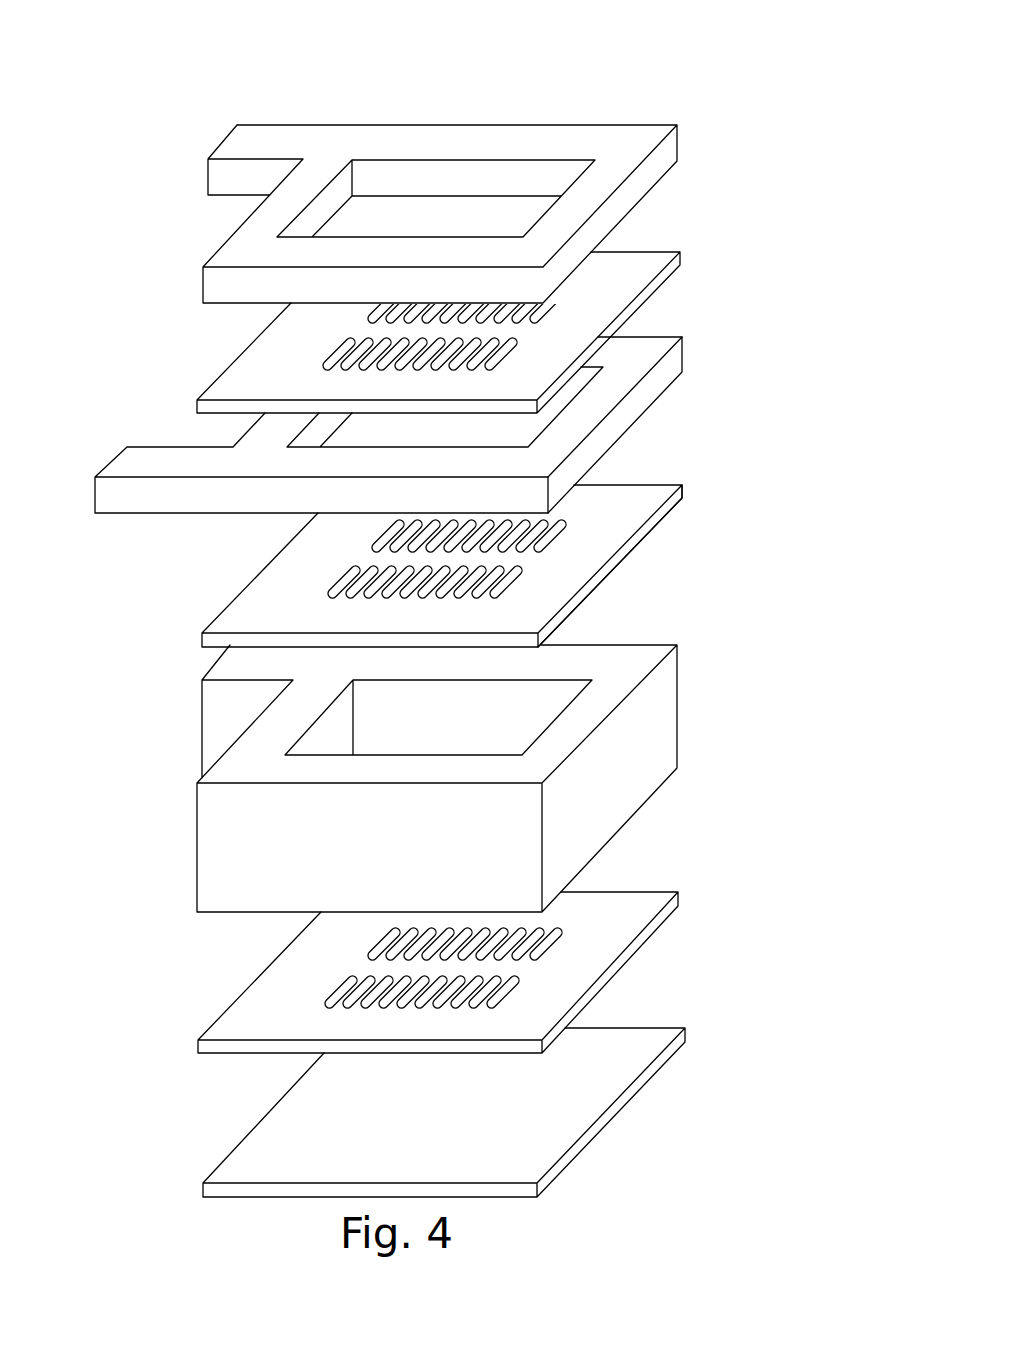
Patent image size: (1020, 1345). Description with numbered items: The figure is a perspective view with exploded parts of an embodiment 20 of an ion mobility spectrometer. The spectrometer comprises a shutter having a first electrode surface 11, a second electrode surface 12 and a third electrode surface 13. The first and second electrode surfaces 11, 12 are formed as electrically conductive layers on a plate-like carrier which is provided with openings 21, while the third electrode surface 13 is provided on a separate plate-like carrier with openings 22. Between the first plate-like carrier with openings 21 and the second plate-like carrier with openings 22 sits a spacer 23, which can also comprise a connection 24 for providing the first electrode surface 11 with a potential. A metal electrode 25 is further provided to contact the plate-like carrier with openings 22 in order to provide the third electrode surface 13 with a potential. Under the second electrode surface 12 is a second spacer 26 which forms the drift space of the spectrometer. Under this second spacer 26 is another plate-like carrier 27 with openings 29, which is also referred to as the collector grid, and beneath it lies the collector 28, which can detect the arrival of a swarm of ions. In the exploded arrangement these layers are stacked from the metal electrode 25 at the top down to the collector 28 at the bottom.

The ion mobility spectrometer embodiment 20 is at (686, 86).
The metal electrode 25 is at (325, 155).
The third electrode surface 13 is at (637, 273).
The openings 22 is at (372, 320).
The connection 24 is at (400, 454).
The spacer 23 is at (600, 440).
The first electrode surface 11 is at (487, 566).
The second electrode surface 12 is at (637, 543).
The openings 21 is at (387, 533).
The second spacer 26 is at (638, 733).
The plate-like carrier 27 is at (675, 908).
The openings 29 is at (383, 943).
The collector 28 is at (627, 1062).